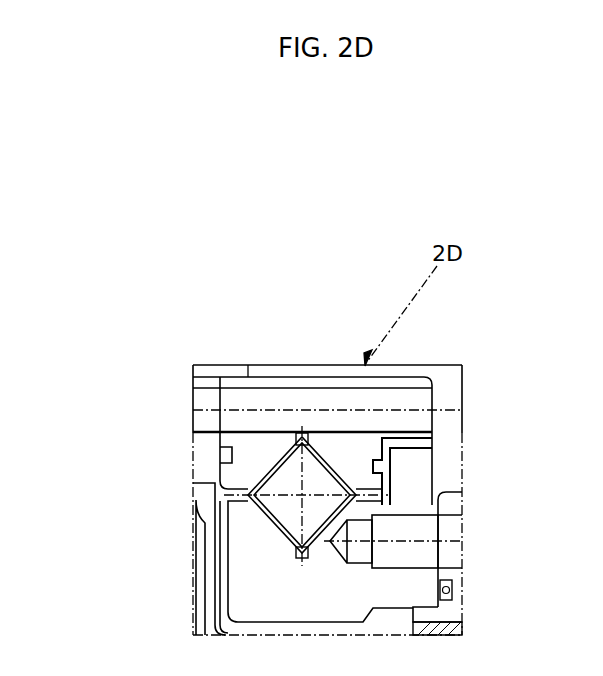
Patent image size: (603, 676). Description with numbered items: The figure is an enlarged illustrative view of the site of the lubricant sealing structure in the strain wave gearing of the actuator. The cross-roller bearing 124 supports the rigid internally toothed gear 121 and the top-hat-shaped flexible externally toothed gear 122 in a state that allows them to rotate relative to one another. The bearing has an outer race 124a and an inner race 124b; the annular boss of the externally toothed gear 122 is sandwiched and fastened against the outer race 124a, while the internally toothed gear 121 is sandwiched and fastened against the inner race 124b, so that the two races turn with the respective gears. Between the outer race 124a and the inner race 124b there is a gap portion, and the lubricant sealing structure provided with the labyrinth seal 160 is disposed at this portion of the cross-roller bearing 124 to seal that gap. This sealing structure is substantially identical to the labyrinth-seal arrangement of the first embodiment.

The rigid internally toothed gear 121 is at (452, 607).
The flexible externally toothed gear 122 is at (213, 608).
The cross-roller bearing 124 is at (87, 453).
The outer race 124a is at (248, 575).
The inner race 124b is at (252, 459).
The labyrinth seal 160 is at (392, 476).